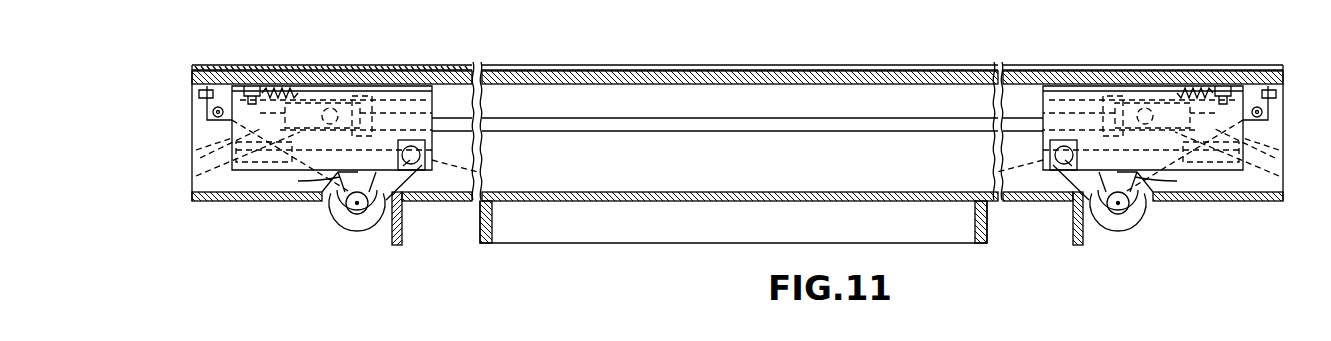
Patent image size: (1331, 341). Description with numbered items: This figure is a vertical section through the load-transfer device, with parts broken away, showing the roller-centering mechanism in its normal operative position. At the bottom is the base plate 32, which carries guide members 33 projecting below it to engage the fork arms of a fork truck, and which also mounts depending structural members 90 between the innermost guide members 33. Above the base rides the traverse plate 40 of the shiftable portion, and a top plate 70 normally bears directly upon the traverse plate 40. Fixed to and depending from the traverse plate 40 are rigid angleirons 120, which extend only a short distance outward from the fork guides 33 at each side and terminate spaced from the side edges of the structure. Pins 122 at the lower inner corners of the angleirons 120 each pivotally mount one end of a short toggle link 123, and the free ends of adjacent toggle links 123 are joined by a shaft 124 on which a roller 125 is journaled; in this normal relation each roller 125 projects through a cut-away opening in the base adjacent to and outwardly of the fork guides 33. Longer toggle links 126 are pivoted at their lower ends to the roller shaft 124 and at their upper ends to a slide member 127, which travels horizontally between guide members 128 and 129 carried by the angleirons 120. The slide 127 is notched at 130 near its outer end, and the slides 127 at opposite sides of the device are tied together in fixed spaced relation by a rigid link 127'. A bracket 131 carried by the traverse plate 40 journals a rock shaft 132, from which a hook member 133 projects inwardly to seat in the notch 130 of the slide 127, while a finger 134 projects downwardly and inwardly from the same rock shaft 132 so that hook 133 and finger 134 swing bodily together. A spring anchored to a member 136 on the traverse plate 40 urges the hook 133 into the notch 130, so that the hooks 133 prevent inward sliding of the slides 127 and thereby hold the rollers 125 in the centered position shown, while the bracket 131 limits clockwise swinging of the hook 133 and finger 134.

The top plate 70 is at (705, 68).
The traverse plate 40 is at (775, 72).
The plate 32 is at (222, 203).
The guide members 33 is at (1073, 247).
The structural members 90 is at (567, 240).
The angleirons 120 is at (1057, 93).
The pins 122 is at (1004, 170).
The toggle links 123 is at (1075, 186).
The shaft 124 is at (1122, 214).
The roller 125 is at (1140, 220).
The toggle links 126 is at (1185, 182).
The slide member 127 is at (737, 80).
The rigid link 127' is at (737, 139).
The guide member 128 is at (1278, 178).
The guide member 129 is at (1135, 93).
The notch 130 is at (1222, 172).
The bracket 131 is at (1262, 100).
The rock shaft 132 is at (1262, 115).
The hook member 133 is at (1197, 88).
The finger 134 is at (1245, 150).
The member 136 is at (1232, 85).